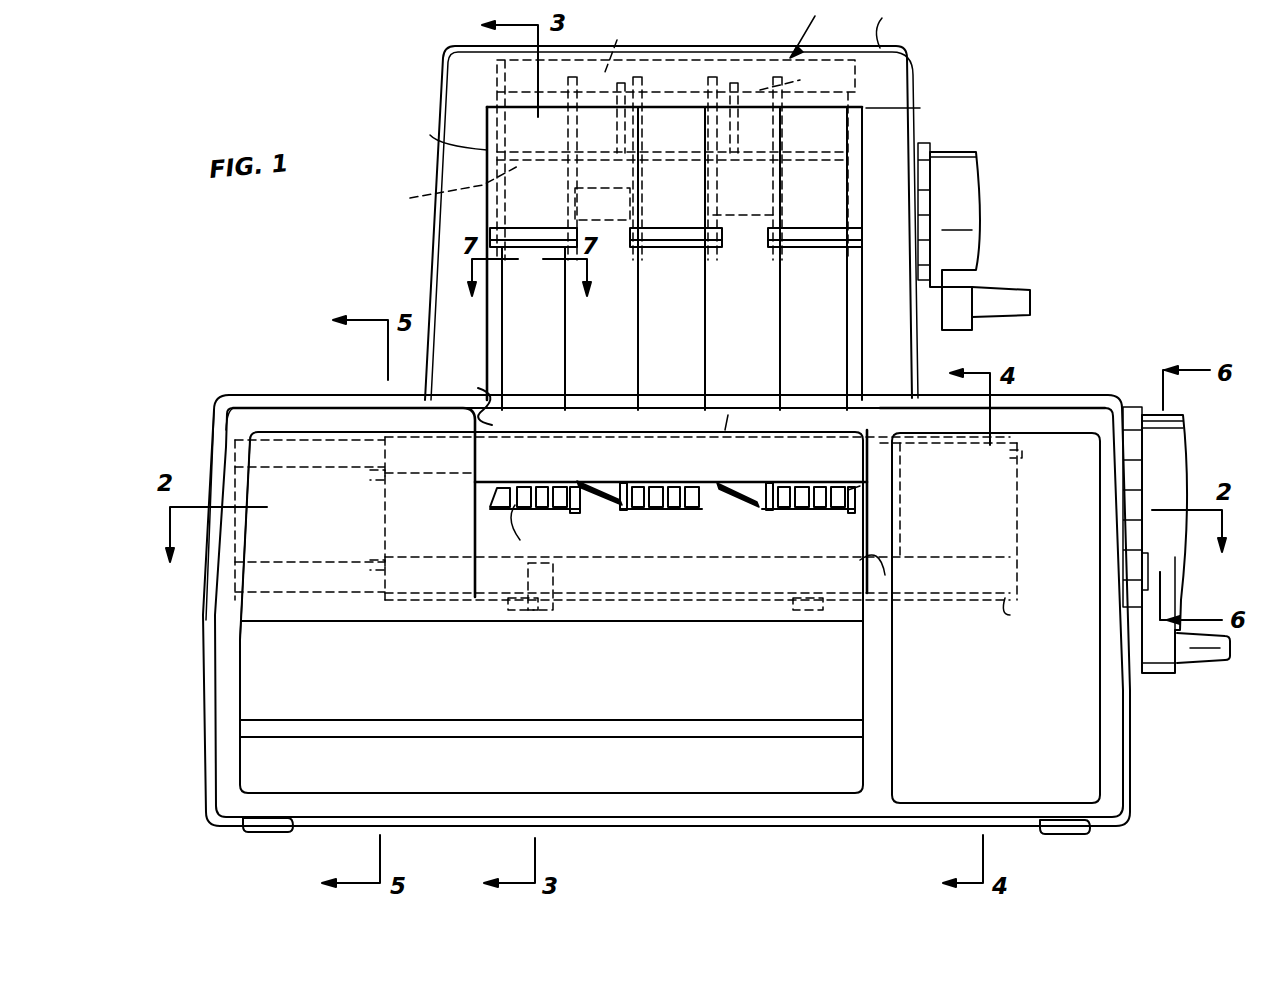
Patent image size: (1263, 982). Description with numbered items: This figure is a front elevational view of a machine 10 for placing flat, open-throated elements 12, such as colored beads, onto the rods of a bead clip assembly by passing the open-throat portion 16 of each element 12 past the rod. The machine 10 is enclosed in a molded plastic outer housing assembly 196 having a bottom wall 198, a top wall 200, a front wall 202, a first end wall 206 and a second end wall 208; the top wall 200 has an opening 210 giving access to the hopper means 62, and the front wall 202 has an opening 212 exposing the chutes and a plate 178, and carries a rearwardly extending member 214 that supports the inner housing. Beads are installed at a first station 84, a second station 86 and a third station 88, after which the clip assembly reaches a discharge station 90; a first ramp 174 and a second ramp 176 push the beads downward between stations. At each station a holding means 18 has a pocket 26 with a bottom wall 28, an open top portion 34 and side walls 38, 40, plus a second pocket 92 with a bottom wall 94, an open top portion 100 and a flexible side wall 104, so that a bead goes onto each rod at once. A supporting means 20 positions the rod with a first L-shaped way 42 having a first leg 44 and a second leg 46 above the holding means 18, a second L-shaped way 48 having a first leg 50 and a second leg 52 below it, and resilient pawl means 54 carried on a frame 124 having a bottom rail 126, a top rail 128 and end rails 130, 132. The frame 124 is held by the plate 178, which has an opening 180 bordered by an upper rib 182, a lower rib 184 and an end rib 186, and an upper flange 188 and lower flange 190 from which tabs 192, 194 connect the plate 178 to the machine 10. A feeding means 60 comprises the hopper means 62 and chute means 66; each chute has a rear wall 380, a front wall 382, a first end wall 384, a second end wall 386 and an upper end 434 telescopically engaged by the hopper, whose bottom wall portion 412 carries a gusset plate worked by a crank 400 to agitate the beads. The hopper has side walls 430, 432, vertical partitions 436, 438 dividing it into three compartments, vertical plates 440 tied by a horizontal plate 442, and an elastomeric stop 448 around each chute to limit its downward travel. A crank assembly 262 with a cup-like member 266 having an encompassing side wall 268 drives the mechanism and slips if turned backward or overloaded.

The machine 10 is at (178, 686).
The open-throated element 12 is at (527, 510).
The open-throat portion 16 is at (548, 510).
The holding means 18 is at (480, 504).
The supporting means 20 is at (400, 615).
The pocket 26 is at (527, 485).
The bottom wall 28 is at (490, 508).
The open top portion 34 is at (548, 486).
The side wall 38 is at (512, 506).
The side wall 40 is at (852, 385).
The first L-shaped way 42 is at (512, 420).
The first leg 44 is at (410, 470).
The second leg 46 is at (540, 486).
The second L-shaped way 48 is at (568, 607).
The first leg 50 is at (325, 632).
The second leg 52 is at (538, 620).
The resilient pawl means 54 is at (228, 557).
The feeding means 60 is at (920, 103).
The hopper means 62 is at (813, 29).
The chute means 66 is at (575, 370).
The first station 84 is at (566, 545).
The second station 86 is at (660, 560).
The third station 88 is at (815, 530).
The discharge station 90 is at (1010, 596).
The second pocket 92 is at (855, 420).
The bottom wall 94 is at (690, 510).
The open top portion 100 is at (730, 415).
The flexible side wall 104 is at (560, 500).
The frame 124 is at (265, 625).
The bottom rail 126 is at (1031, 624).
The top rail 128 is at (1025, 458).
The end rail 130 is at (233, 460).
The end rail 132 is at (1020, 507).
The first ramp 174 is at (600, 508).
The second ramp 176 is at (740, 508).
The plate 178 is at (380, 512).
The opening 180 is at (890, 575).
The upper rib 182 is at (940, 460).
The lower rib 184 is at (905, 557).
The end rib 186 is at (910, 532).
The upper flange 188 is at (588, 430).
The lower flange 190 is at (690, 620).
The tab 192 is at (533, 418).
The tab 194 is at (803, 420).
The outer housing assembly 196 is at (1128, 778).
The bottom wall 198 is at (600, 825).
The top wall 200 is at (890, 47).
The front wall 202 is at (1000, 705).
The first end wall 206 is at (205, 648).
The second end wall 208 is at (1128, 712).
The opening 210 is at (899, 24).
The opening 212 is at (462, 394).
The rearwardly extending member 214 is at (773, 718).
The crank assembly 262 is at (1196, 626).
The cup-like member 266 is at (1187, 470).
The side wall 268 is at (1163, 437).
The rear wall 380 is at (666, 150).
The front wall 382 is at (505, 90).
The first end wall 384 is at (500, 312).
The second end wall 386 is at (568, 316).
The crank 400 is at (985, 196).
The bottom wall portion 412 is at (441, 185).
The side wall 430 is at (437, 131).
The side wall 432 is at (870, 186).
The upper end 434 is at (915, 145).
The vertical partition 436 is at (627, 43).
The vertical partition 438 is at (802, 77).
The vertical plate 440 is at (592, 195).
The horizontal plate 442 is at (726, 62).
The elastomeric stop 448 is at (516, 240).